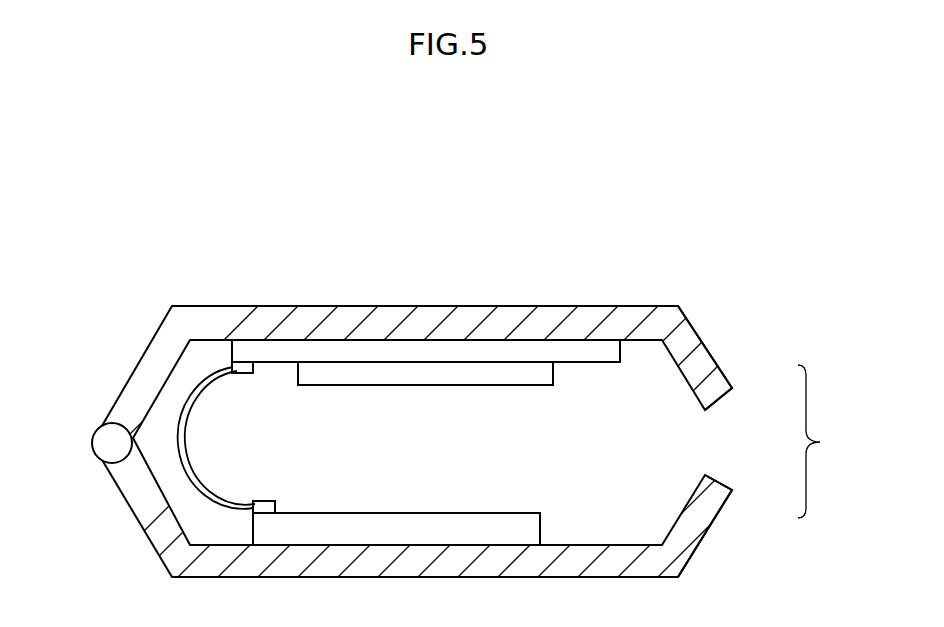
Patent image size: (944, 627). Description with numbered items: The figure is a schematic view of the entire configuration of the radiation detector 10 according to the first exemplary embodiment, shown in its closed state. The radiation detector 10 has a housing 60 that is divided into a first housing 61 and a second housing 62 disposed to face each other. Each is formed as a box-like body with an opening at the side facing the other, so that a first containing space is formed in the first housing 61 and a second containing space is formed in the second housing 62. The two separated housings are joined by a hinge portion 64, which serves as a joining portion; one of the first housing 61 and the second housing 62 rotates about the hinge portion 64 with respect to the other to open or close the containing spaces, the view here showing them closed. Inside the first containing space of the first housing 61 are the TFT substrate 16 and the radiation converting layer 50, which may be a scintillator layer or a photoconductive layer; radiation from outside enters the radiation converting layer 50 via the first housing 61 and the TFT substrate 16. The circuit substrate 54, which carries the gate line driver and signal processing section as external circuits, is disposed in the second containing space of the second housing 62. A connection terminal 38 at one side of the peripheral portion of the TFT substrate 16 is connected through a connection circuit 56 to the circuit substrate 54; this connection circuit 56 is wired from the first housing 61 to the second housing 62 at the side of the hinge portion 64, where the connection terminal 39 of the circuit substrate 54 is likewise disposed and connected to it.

The radiation detector 10 is at (737, 253).
The TFT substrate 16 is at (592, 355).
The connection terminal 38 is at (243, 369).
The connection terminal 39 is at (263, 507).
The radiation converting layer 50 is at (485, 378).
The circuit substrate 54 is at (415, 527).
The connection circuit 56 is at (200, 482).
The housing 60 is at (829, 441).
The first housing 61 is at (725, 380).
The second housing 62 is at (713, 505).
The hinge portion 64 is at (97, 442).